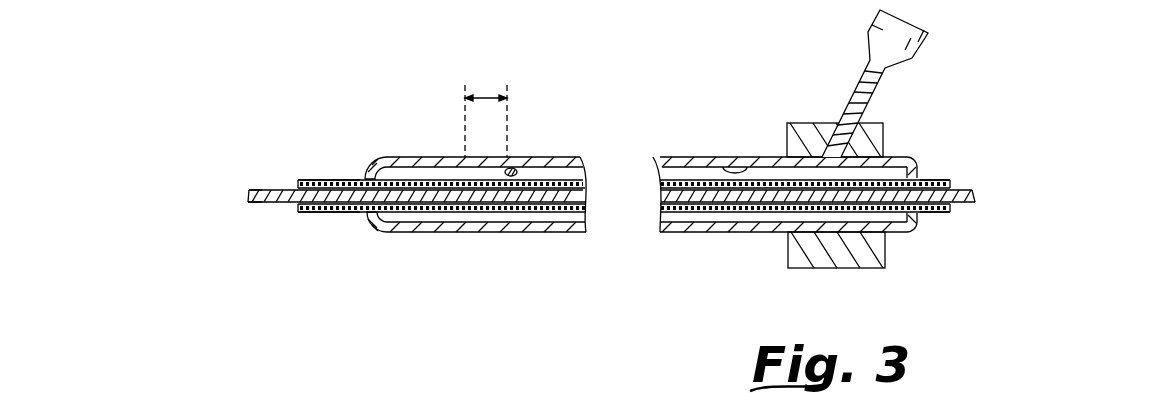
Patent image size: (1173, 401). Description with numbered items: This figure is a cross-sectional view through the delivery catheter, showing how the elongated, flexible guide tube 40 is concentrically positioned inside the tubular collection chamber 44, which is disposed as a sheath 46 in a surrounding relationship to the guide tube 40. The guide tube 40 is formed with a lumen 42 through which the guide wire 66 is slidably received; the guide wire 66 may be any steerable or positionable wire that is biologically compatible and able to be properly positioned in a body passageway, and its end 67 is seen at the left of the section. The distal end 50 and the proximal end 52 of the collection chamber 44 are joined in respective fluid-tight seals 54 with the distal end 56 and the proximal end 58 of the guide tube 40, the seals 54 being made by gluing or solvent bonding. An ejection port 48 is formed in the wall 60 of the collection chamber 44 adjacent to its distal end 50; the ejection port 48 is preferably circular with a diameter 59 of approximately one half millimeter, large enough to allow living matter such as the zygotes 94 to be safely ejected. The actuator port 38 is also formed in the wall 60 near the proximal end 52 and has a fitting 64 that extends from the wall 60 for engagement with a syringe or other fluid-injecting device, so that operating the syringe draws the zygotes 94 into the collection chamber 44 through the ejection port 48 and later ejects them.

The actuator port 38 is at (867, 66).
The guide tube 40 is at (317, 212).
The lumen 42 is at (298, 208).
The collection chamber 44 is at (503, 222).
The sheath 46 is at (662, 158).
The ejection port 48 is at (477, 163).
The distal end 50 is at (375, 157).
The proximal end 52 is at (917, 163).
The fluid-tight seals 54 is at (360, 178).
The distal end 56 is at (335, 179).
The proximal end 58 is at (940, 213).
The diameter 59 is at (487, 97).
The wall 60 is at (718, 160).
The fitting 64 is at (787, 135).
The guide wire 66 is at (258, 201).
The wire tip 67 is at (258, 190).
The zygotes 94 is at (513, 167).